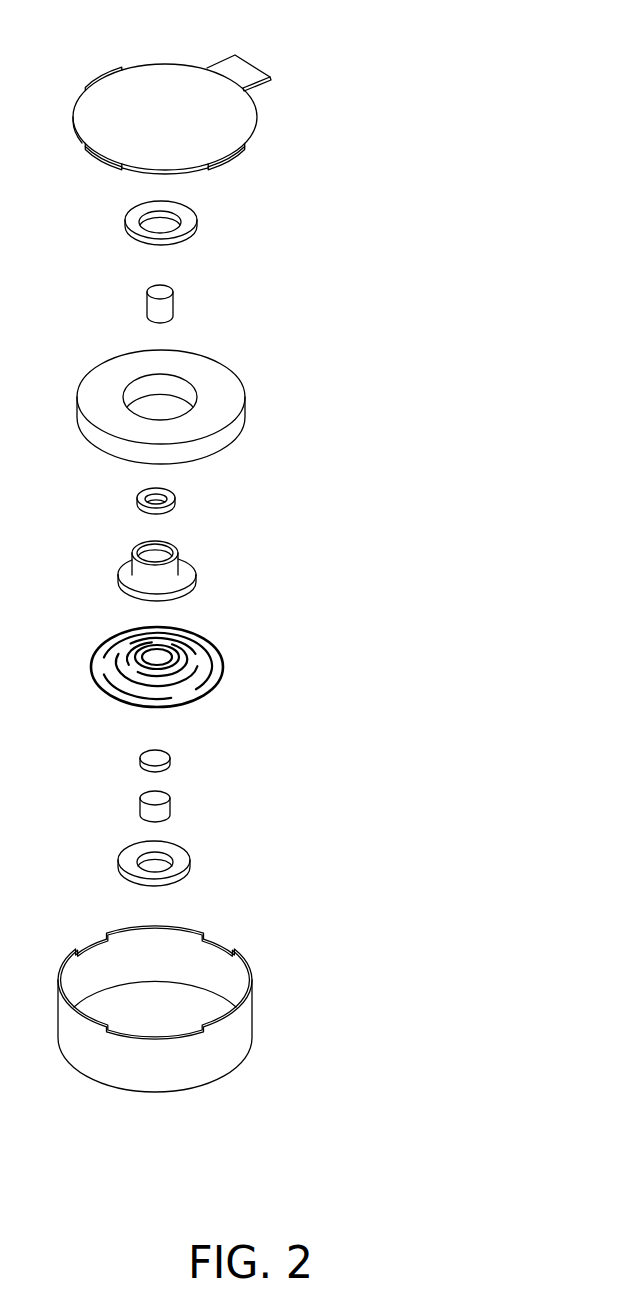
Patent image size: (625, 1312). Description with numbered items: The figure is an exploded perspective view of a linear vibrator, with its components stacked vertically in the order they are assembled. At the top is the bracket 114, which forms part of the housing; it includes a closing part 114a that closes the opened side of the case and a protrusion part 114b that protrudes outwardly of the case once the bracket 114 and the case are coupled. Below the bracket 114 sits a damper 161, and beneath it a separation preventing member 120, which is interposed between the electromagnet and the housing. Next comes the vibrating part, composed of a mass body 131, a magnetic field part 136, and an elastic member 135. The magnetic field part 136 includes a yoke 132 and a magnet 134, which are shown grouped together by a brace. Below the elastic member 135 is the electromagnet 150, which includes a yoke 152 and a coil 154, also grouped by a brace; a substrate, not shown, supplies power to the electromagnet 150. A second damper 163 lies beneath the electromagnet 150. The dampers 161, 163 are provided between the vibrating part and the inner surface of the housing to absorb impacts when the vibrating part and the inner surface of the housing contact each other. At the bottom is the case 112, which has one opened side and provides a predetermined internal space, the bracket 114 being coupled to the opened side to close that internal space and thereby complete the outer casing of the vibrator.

The case 112 is at (242, 1030).
The bracket 114 is at (251, 87).
The closing part 114a is at (235, 122).
The protrusion part 114b is at (288, 100).
The separation preventing member 120 is at (172, 305).
The mass body 131 is at (225, 385).
The yoke 132 is at (193, 570).
The magnet 134 is at (175, 498).
The elastic member 135 is at (223, 663).
The magnetic field part 136 is at (245, 543).
The electromagnet 150 is at (286, 776).
The yoke 152 is at (165, 757).
The coil 154 is at (160, 798).
The damper 161 is at (187, 222).
The damper 163 is at (182, 863).